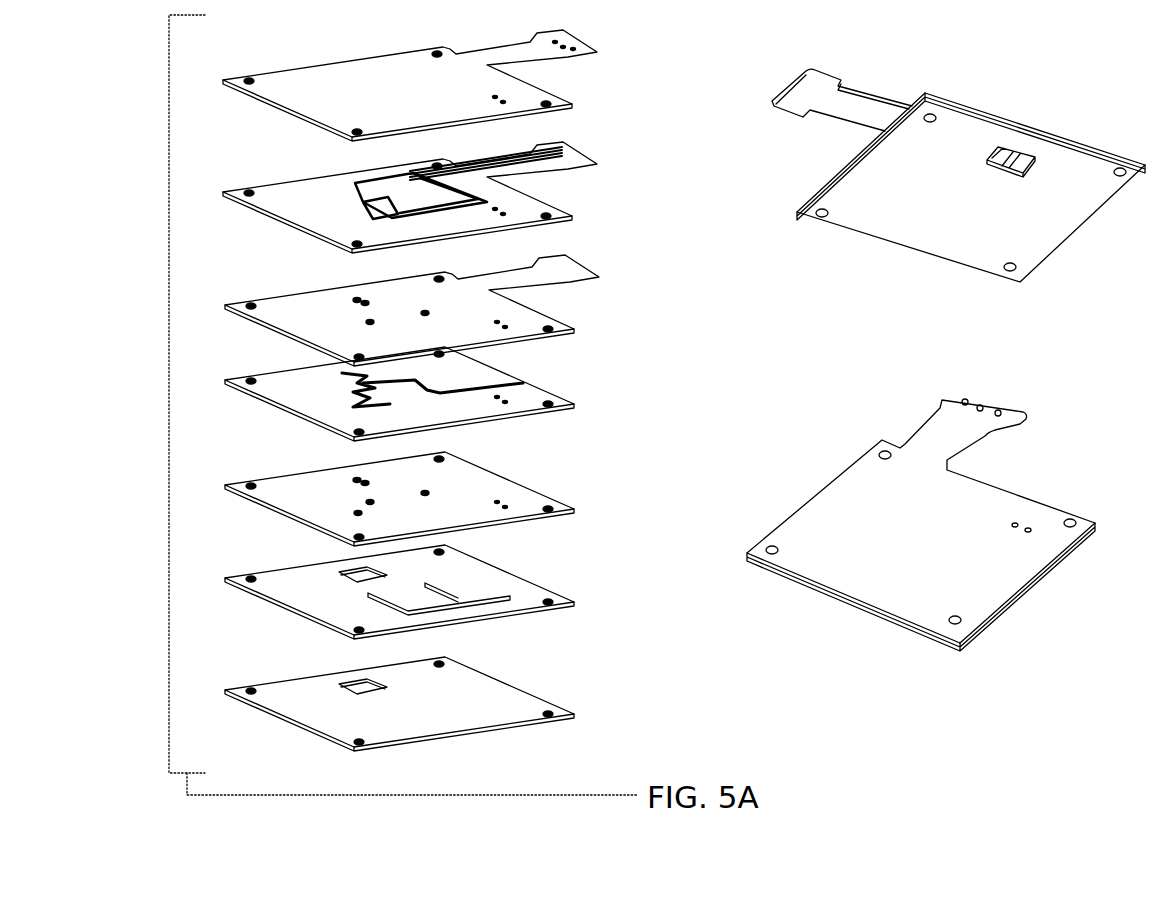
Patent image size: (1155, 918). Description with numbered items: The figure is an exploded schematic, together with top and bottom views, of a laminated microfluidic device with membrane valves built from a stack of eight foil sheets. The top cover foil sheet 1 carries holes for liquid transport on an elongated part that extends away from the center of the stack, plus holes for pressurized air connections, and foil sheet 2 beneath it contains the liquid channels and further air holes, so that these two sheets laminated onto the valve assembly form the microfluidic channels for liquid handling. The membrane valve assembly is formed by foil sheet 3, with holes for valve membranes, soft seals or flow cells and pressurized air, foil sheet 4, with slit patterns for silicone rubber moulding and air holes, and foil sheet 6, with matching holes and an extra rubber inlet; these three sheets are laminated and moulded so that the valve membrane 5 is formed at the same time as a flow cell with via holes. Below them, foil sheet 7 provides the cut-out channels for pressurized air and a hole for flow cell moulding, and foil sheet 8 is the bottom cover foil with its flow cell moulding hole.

The foil sheet 1 is at (522, 98).
The foil sheet 2 is at (533, 207).
The foil sheet 3 is at (533, 322).
The foil sheet 4 is at (533, 398).
The valve membrane 5 is at (437, 383).
The foil sheet 6 is at (522, 498).
The foil sheet 7 is at (532, 598).
The foil sheet 8 is at (520, 708).